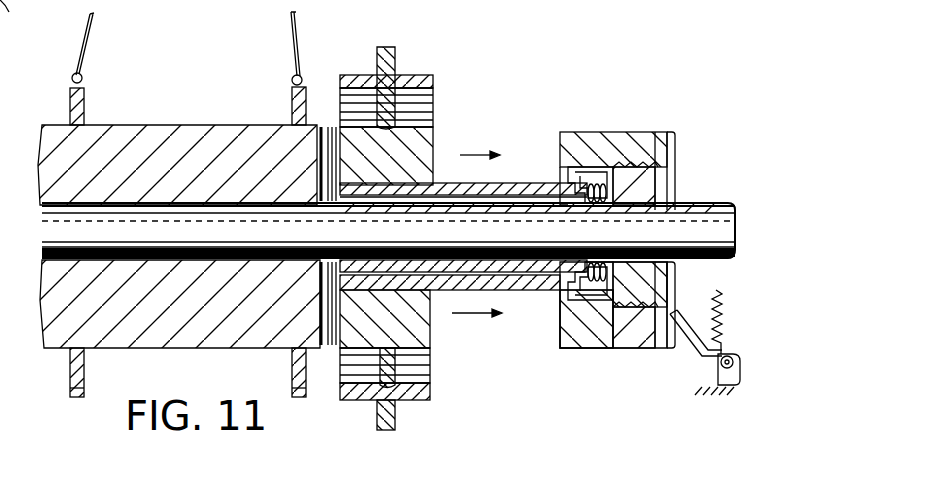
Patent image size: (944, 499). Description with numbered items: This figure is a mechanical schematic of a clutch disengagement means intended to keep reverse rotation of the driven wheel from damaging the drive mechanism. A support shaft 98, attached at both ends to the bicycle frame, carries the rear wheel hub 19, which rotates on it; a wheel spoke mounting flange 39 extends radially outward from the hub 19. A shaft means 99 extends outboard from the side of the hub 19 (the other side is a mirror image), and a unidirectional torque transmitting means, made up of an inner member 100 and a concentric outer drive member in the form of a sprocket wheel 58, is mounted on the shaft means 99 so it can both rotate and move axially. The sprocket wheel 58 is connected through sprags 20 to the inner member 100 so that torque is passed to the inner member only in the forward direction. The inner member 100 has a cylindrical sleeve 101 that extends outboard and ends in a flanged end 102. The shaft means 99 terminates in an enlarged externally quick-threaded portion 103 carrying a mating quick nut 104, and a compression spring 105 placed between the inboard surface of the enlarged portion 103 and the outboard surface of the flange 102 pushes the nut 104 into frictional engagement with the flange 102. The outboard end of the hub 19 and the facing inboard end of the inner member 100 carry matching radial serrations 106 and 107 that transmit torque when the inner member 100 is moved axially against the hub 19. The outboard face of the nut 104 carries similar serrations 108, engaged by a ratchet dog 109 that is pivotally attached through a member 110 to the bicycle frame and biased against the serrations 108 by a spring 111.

The rear wheel hub 19 is at (185, 136).
The wheel spoke mounting flange 39 is at (300, 103).
The radial serrations 106 is at (323, 127).
The radial serrations 107 is at (334, 127).
The sprocket wheel 58 is at (397, 62).
The sprags 20 is at (392, 106).
The inner member 100 is at (437, 132).
The shaft means 99 is at (533, 197).
The cylindrical sleeve 101 is at (525, 273).
The quick nut 104 is at (622, 137).
The enlarged externally quick-threaded portion 103 is at (643, 184).
The serrations 108 is at (676, 136).
The support shaft 98 is at (708, 226).
The flanged end 102 is at (585, 306).
The compression spring 105 is at (592, 297).
The ratchet dog 109 is at (700, 358).
The member 110 is at (718, 388).
The spring 111 is at (714, 292).